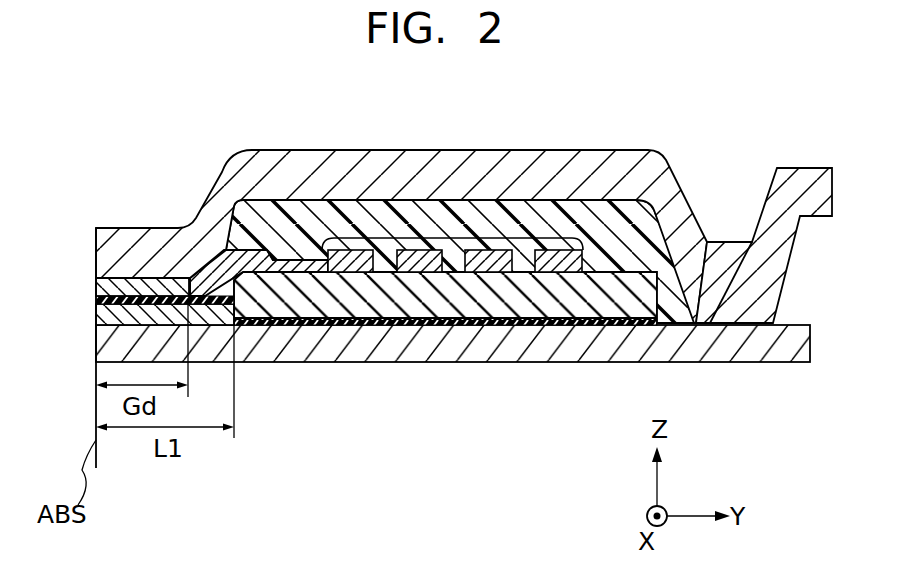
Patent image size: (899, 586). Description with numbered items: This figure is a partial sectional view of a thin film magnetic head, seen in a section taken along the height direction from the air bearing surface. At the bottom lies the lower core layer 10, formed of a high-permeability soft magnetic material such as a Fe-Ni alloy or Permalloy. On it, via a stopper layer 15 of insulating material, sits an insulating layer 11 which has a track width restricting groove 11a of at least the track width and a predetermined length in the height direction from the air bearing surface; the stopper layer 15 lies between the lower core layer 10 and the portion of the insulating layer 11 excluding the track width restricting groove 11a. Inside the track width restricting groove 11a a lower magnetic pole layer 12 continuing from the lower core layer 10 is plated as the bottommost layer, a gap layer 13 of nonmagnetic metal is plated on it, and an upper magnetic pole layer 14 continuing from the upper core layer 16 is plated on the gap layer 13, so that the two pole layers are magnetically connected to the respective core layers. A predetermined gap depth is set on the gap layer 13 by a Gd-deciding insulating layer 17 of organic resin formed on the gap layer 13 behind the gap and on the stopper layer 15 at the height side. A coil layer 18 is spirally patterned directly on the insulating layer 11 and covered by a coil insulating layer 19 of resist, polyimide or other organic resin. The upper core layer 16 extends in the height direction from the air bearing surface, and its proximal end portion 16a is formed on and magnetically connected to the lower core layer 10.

The lower core layer 10 is at (528, 345).
The insulating layer 11 is at (383, 298).
The track width restricting groove 11a is at (147, 302).
The lower magnetic pole layer 12 is at (96, 315).
The gap layer 13 is at (96, 302).
The upper magnetic pole layer 14 is at (96, 278).
The stopper layer 15 is at (465, 322).
The upper core layer 16 is at (352, 172).
The proximal end portion 16a is at (735, 295).
The Gd-deciding insulating layer 17 is at (272, 270).
The coil layer 18 is at (458, 238).
The coil insulating layer 19 is at (619, 225).